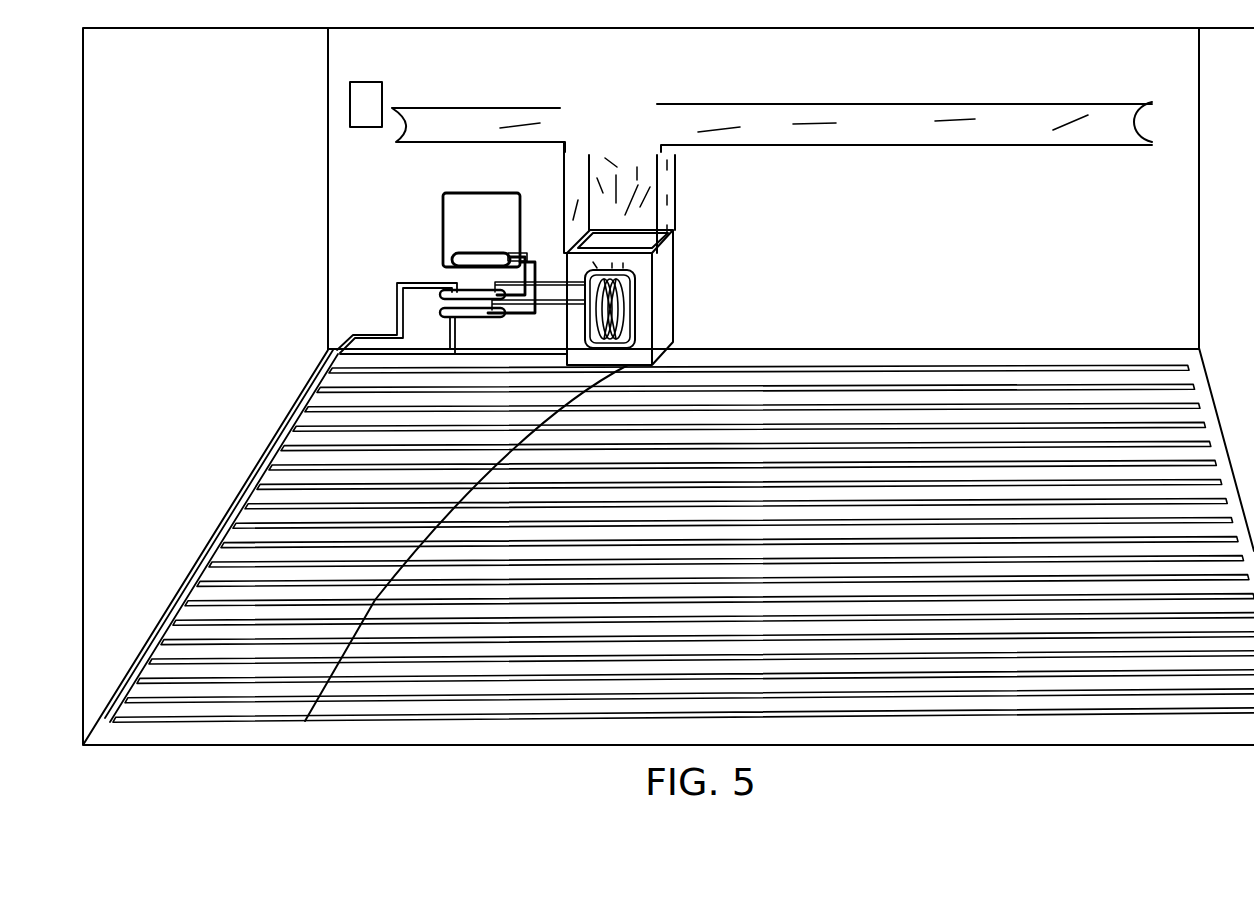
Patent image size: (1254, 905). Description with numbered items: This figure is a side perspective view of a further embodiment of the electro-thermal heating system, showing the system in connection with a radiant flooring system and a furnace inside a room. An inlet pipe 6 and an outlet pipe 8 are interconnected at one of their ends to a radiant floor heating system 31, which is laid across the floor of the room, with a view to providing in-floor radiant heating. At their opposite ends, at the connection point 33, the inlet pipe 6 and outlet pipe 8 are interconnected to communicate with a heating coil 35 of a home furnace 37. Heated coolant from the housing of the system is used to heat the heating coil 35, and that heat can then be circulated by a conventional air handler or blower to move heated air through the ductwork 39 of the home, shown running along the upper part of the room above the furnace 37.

The inlet pipe 6 is at (438, 311).
The outlet pipe 8 is at (440, 293).
The radiant floor heating system 31 is at (233, 567).
The connection point 33 is at (585, 292).
The heating coil 35 is at (632, 321).
The home furnace 37 is at (668, 276).
The air duct 39 is at (812, 122).